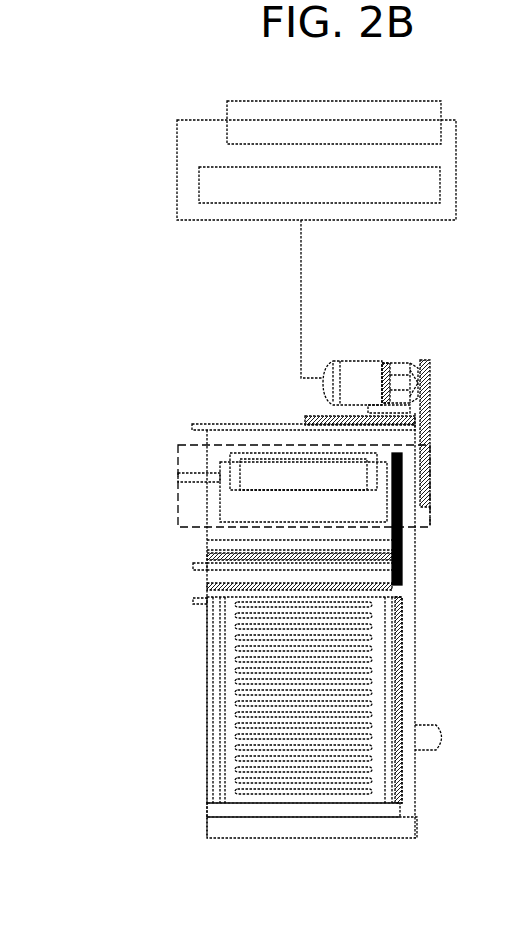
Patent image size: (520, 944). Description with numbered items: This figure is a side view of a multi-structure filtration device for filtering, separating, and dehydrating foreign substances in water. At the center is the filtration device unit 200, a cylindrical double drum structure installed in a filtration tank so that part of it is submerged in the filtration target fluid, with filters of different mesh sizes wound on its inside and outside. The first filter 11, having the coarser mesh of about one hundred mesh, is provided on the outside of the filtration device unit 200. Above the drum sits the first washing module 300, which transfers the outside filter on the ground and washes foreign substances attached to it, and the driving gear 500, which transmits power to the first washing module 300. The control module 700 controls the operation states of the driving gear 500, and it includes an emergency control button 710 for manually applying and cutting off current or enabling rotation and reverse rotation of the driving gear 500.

The control module 700 is at (227, 103).
The emergency control button 710 is at (177, 187).
The driving gear 500 is at (430, 384).
The first washing module 300 is at (178, 483).
The filtration device unit 200 is at (395, 647).
The first filter 11 is at (383, 703).